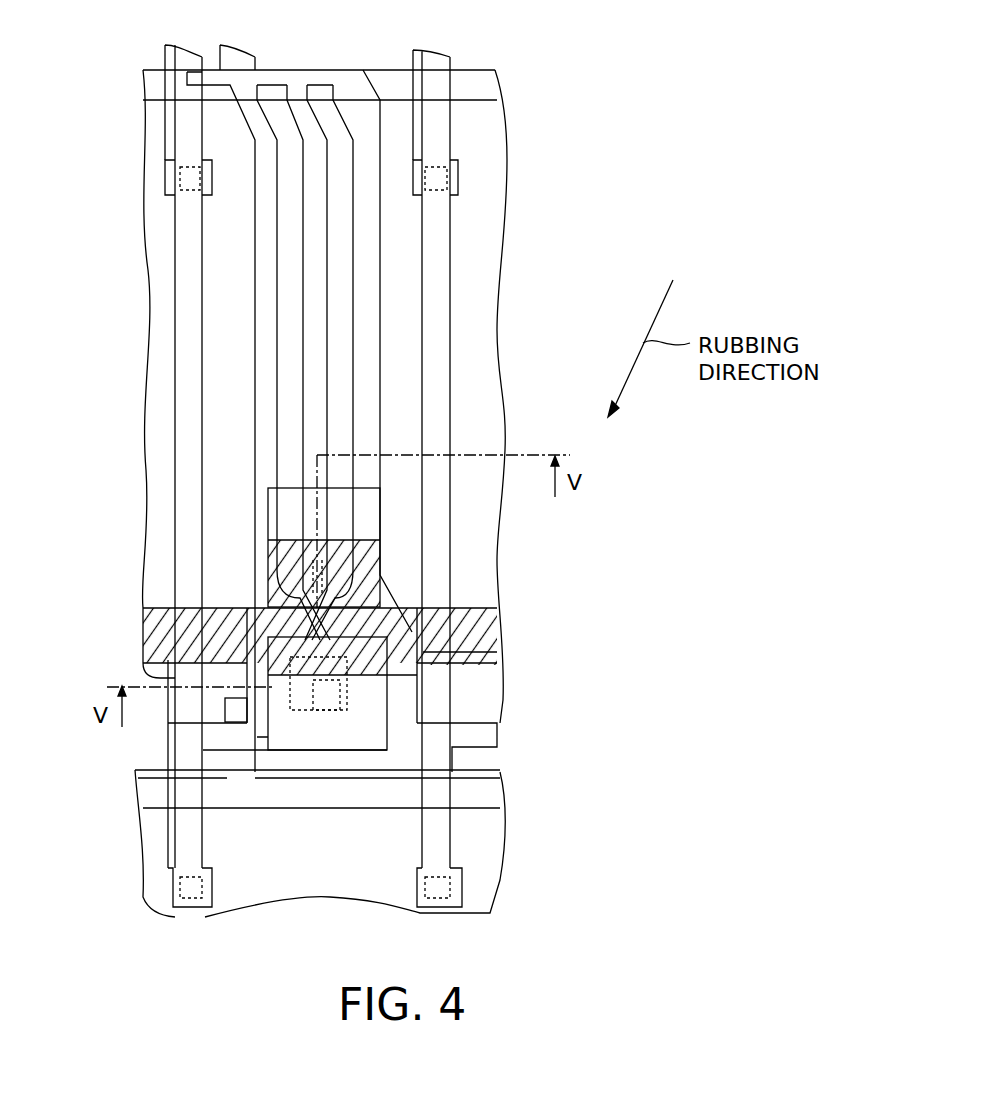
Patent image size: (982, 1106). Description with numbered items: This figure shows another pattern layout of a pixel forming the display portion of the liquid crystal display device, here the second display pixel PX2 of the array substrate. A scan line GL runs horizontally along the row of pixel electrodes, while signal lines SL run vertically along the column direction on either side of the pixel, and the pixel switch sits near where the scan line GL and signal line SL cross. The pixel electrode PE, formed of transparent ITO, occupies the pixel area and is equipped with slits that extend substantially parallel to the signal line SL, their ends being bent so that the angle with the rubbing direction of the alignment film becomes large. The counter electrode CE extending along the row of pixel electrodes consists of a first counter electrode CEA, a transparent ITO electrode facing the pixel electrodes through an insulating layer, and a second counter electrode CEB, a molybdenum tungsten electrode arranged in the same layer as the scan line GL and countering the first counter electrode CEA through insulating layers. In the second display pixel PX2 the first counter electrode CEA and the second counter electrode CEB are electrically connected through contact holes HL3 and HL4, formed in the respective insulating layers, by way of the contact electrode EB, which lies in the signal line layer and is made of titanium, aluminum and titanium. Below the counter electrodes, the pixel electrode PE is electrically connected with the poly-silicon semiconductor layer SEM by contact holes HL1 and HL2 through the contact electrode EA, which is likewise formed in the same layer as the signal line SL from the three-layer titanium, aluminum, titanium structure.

The second display pixel PX2 is at (535, 147).
The scan line GL is at (298, 80).
The signal line SL is at (185, 308).
The pixel electrode PE is at (370, 405).
The counter electrode CE is at (402, 605).
The first counter electrode CEA is at (475, 540).
The second counter electrode CEB is at (365, 665).
The contact electrode EB is at (295, 508).
The contact electrode EA is at (453, 700).
The semiconductor layer SEM is at (470, 730).
The contact hole HL1 is at (327, 770).
The contact hole HL2 is at (325, 712).
The contact hole HL3 is at (377, 563).
The contact hole HL4 is at (333, 532).